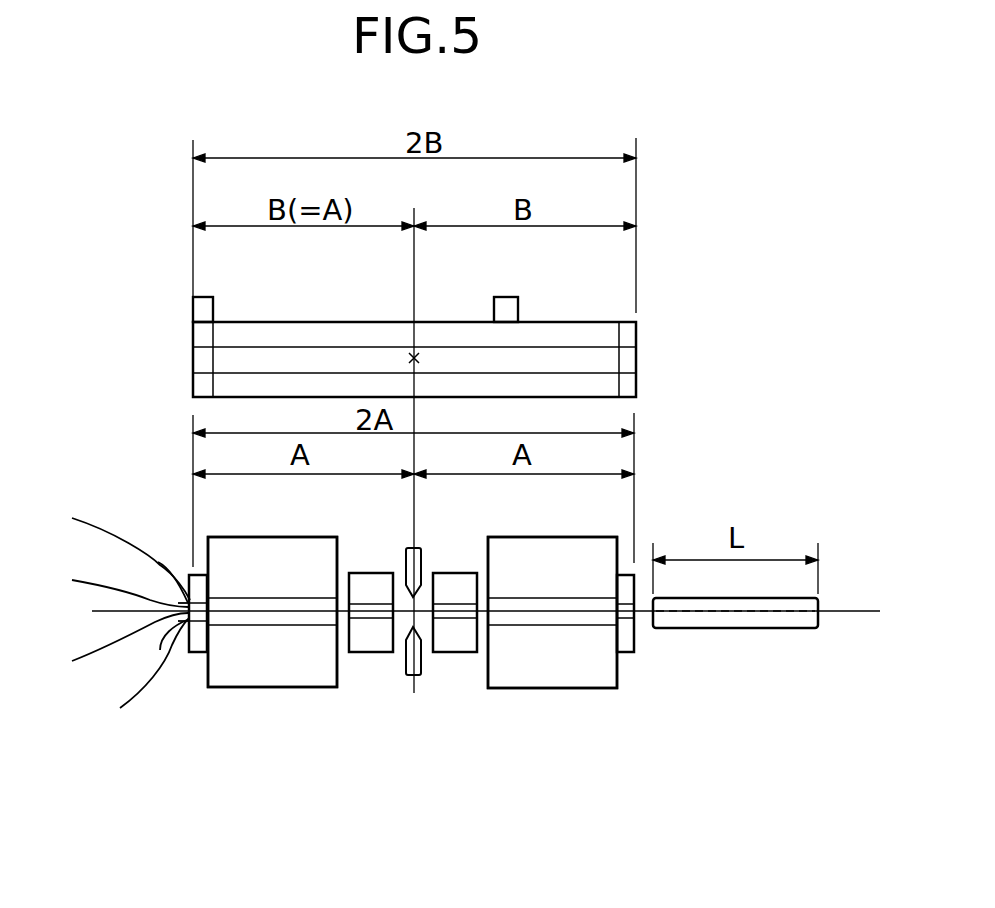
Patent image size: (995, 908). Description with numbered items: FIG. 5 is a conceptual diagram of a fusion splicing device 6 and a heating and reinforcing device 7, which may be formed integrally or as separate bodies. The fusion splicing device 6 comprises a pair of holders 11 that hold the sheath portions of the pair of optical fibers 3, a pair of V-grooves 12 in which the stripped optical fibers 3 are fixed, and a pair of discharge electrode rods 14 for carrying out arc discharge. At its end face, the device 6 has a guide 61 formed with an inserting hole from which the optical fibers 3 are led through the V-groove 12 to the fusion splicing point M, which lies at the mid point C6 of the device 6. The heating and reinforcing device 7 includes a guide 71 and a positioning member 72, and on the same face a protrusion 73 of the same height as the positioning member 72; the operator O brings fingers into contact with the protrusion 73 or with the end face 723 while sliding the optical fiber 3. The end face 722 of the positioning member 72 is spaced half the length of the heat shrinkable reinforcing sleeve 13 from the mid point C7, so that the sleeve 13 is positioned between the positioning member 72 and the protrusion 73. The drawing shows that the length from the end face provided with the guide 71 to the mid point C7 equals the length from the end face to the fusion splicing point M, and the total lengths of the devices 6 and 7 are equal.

The heating and reinforcing device 7 is at (401, 304).
The guide 71 is at (161, 356).
The positioning member 72 is at (514, 299).
The protrusion 73 is at (203, 297).
The end face 722 is at (493, 310).
The end face 723 is at (192, 305).
The mid point C7 is at (413, 356).
The fusion splicing device 6 is at (476, 608).
The guide 61 is at (203, 588).
The optical fiber 3 is at (290, 613).
The holder 11 is at (308, 668).
The V-groove 12 is at (372, 618).
The discharge electrode rod 14 is at (410, 552).
The heat shrinkable reinforcing sleeve 13 is at (737, 617).
The mid point C6 is at (418, 613).
The fusion splicing point M is at (416, 606).
The operator O is at (155, 687).